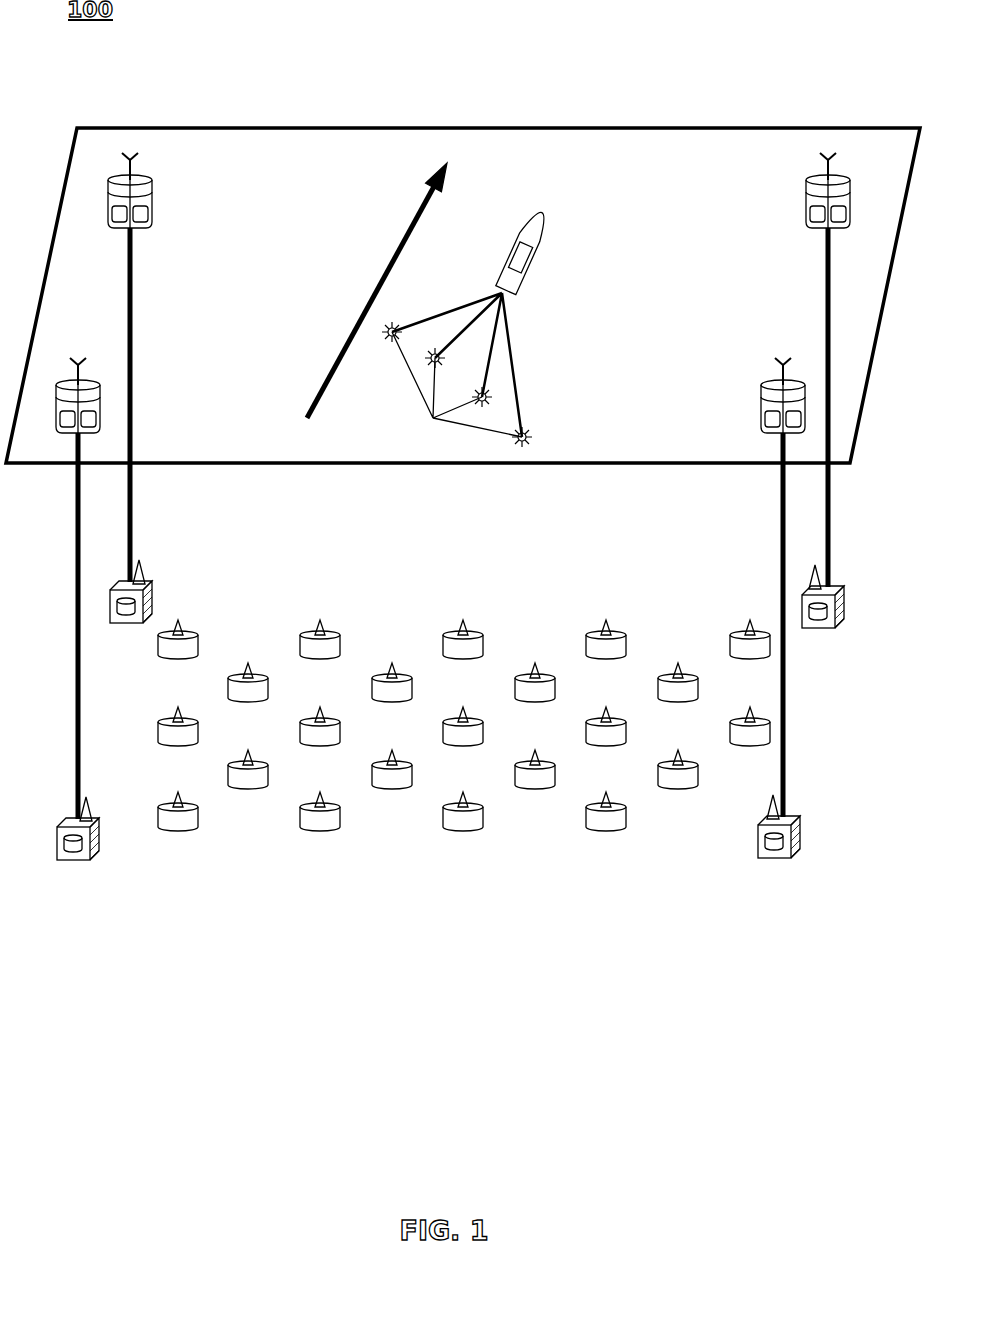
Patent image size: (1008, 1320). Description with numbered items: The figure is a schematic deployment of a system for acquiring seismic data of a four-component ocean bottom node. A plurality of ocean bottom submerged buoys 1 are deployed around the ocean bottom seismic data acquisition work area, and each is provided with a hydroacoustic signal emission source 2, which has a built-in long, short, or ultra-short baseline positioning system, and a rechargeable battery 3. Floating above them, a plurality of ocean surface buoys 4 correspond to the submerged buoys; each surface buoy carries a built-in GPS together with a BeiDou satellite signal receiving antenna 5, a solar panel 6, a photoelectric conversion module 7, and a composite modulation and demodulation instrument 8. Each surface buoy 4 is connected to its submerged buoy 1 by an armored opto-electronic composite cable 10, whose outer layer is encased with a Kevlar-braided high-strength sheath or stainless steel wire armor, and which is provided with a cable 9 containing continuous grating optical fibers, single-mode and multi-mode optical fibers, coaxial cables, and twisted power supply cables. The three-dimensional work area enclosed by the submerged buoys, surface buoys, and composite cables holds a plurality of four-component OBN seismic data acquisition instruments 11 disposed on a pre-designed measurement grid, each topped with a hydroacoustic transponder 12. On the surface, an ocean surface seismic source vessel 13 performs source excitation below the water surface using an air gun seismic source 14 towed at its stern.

The ocean bottom submerged buoy 1 is at (843, 602).
The hydroacoustic signal emission source 2 is at (141, 561).
The rechargeable battery 3 is at (95, 848).
The ocean surface buoy 4 is at (108, 213).
The BeiDou satellite signal receiving antenna 5 is at (136, 160).
The solar panel 6 is at (152, 182).
The photoelectric conversion module 7 is at (152, 222).
The composite modulation and demodulation instrument 8 is at (110, 224).
The cable 9 is at (145, 195).
The armored opto-electronic composite cable 10 is at (825, 290).
The four-component OBN seismic data acquisition instrument 11 is at (485, 640).
The hydroacoustic transponder 12 is at (463, 625).
The ocean surface seismic source vessel 13 is at (523, 250).
The air gun seismic source 14 is at (457, 371).